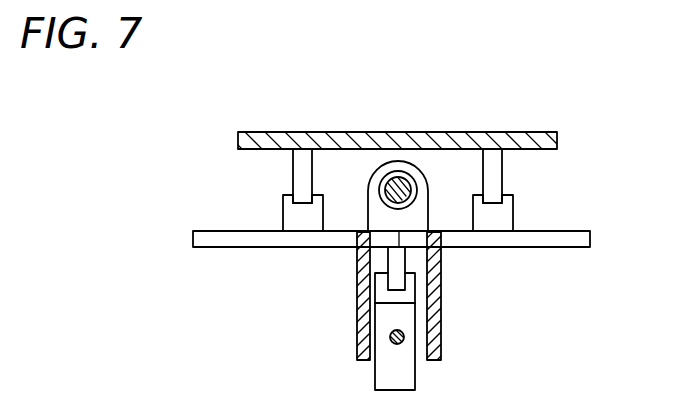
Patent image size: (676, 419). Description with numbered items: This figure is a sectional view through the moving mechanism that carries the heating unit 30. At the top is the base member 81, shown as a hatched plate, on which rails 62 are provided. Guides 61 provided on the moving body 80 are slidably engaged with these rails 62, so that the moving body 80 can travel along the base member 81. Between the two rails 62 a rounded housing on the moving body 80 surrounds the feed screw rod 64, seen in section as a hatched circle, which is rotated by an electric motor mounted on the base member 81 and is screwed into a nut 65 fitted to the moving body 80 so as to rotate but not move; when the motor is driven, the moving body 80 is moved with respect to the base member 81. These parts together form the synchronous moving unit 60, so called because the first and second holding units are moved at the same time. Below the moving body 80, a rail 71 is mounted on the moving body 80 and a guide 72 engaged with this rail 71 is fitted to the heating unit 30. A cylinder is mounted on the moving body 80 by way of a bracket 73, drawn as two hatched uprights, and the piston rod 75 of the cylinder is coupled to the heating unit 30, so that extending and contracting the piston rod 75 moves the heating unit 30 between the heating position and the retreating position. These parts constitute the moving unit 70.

The heating unit 30 is at (382, 377).
The synchronous moving unit 60 is at (418, 158).
The guide 61 is at (283, 215).
The rail 62 is at (293, 167).
The feed screw rod 64 is at (412, 178).
The nut 65 is at (389, 180).
The moving unit 70 is at (423, 313).
The rail 71 is at (401, 265).
The guide 72 is at (413, 297).
The bracket 73 is at (356, 302).
The piston rod 75 is at (399, 343).
The moving body 80 is at (568, 247).
The base member 81 is at (480, 132).